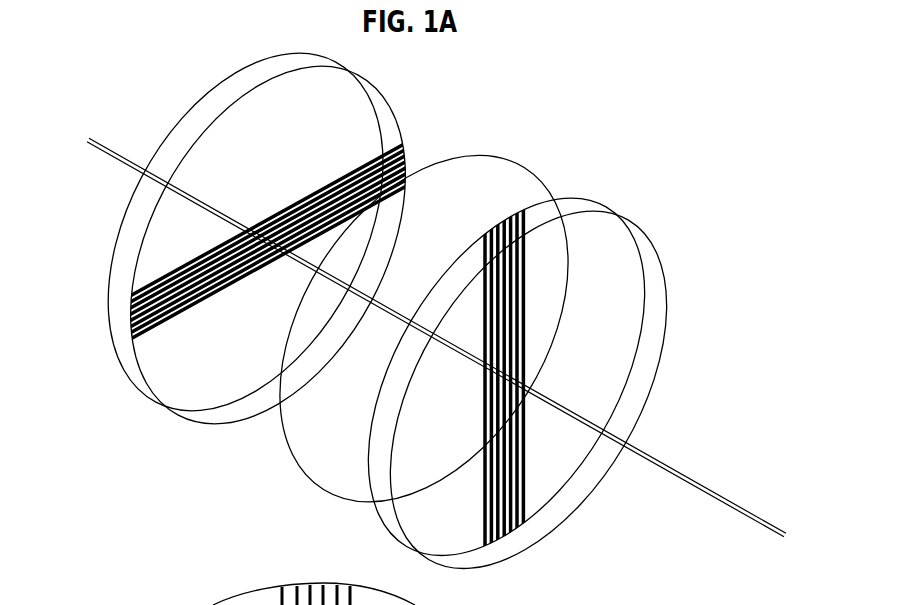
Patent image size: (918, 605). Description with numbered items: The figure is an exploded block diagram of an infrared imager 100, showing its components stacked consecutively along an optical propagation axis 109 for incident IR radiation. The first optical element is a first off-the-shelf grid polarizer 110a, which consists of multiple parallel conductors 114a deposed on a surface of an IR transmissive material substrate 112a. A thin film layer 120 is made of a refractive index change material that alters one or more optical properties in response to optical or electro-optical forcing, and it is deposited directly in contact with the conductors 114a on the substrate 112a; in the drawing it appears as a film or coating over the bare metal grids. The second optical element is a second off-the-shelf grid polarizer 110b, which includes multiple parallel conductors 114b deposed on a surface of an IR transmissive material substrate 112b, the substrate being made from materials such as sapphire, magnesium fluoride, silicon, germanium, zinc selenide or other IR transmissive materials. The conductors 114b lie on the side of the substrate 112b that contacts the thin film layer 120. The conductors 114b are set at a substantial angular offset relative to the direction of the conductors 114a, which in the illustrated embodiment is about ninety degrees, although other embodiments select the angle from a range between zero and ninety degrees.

The infrared (IR) imager 100 is at (676, 132).
The optical propagation axis 109 is at (752, 514).
The first off-the-shelf grid polarizer 110a is at (100, 391).
The second off-the-shelf grid polarizer 110b is at (597, 514).
The IR transmissive material substrate 112a is at (272, 174).
The IR transmissive material substrate 112b is at (620, 294).
The parallel conductors 114a is at (142, 330).
The parallel conductors 114b is at (645, 408).
The thin film layer 120 is at (473, 210).